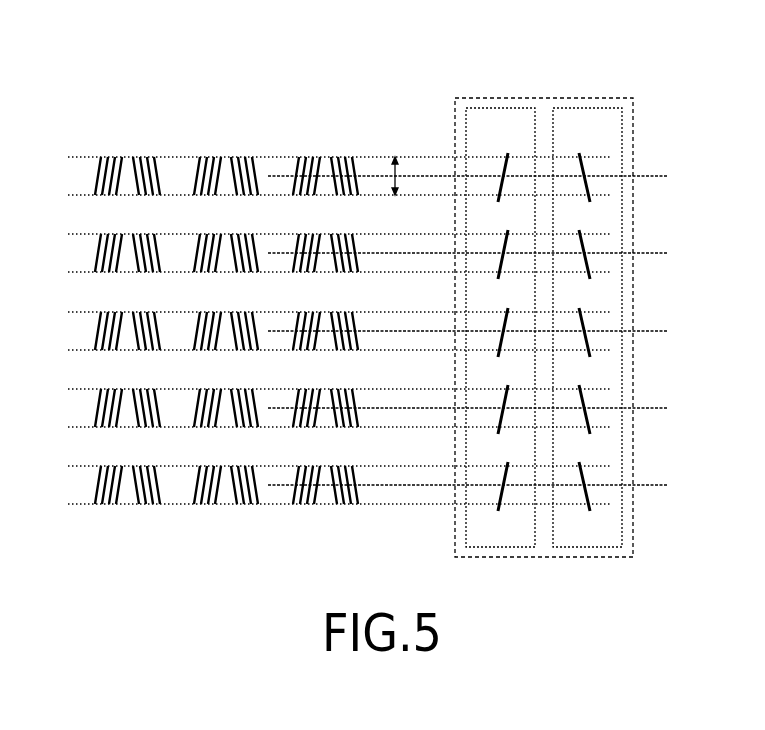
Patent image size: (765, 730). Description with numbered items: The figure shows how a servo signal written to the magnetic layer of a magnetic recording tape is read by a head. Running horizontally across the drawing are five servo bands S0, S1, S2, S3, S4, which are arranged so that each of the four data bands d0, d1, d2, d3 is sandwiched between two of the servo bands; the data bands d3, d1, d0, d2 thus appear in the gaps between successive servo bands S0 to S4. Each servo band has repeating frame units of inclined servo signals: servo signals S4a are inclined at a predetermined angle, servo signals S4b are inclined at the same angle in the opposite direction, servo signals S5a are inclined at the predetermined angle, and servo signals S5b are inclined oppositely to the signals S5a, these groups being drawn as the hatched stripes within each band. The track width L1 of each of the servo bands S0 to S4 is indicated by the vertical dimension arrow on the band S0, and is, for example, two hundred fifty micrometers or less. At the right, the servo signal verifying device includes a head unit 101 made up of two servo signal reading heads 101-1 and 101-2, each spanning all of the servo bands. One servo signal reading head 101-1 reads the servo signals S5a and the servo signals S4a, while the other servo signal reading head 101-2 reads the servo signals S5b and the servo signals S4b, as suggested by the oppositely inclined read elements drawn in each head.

The servo signal reading head 101 is at (566, 283).
The servo signal reading head 101-1 is at (495, 108).
The servo signal reading head 101-2 is at (578, 108).
The track width L1 is at (401, 167).
The servo band S0 is at (362, 161).
The servo band S1 is at (362, 253).
The servo band S2 is at (362, 331).
The servo band S3 is at (362, 408).
The servo band S4 is at (362, 485).
The data band d0 is at (338, 369).
The data band d1 is at (338, 292).
The data band d2 is at (338, 446).
The data band d3 is at (338, 214).
The servo signals S4a is at (222, 153).
The servo signals S4b is at (255, 153).
The servo signals S5a is at (322, 153).
The servo signals S5b is at (357, 153).